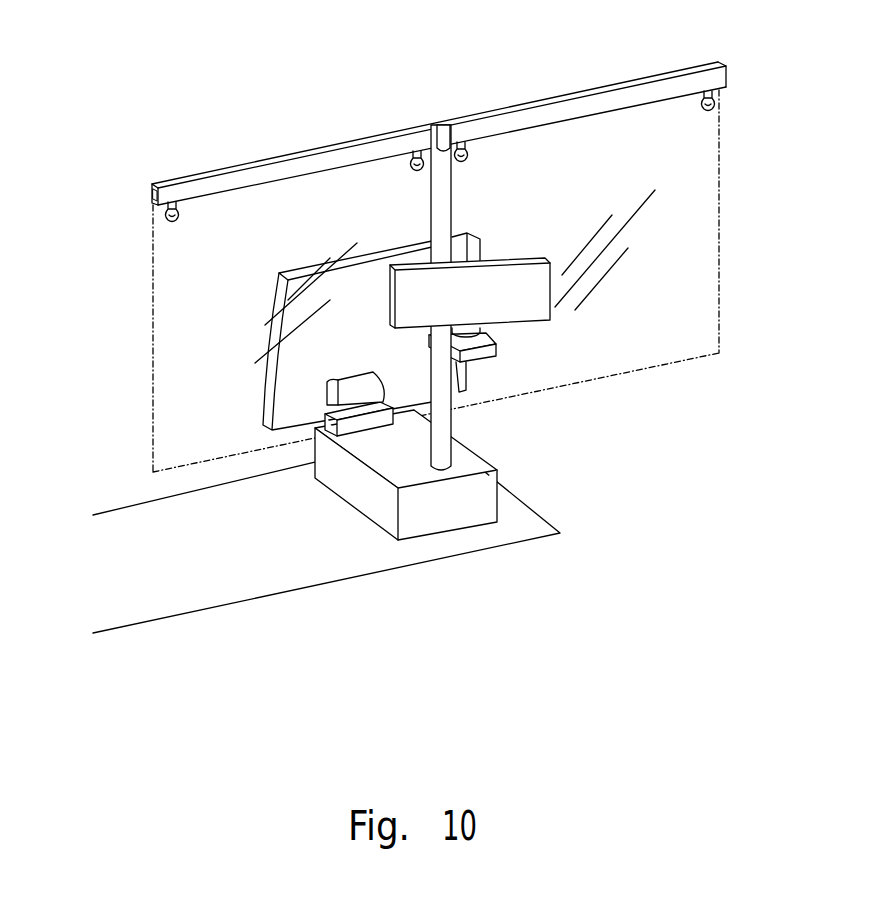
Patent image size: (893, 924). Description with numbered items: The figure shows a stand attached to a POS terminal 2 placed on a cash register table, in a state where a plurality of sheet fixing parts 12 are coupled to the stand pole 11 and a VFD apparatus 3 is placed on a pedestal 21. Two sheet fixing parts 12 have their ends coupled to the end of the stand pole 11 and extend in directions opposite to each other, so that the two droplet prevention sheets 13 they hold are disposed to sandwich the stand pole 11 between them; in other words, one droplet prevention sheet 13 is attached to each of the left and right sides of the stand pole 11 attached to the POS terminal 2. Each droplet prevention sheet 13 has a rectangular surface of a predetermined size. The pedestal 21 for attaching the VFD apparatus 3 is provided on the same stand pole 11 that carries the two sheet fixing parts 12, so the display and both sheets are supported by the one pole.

The POS terminal 2 is at (409, 555).
The VFD apparatus 3 is at (525, 315).
The stand pole 11 is at (443, 172).
The sheet fixing part 12 is at (300, 168).
The droplet prevention sheet 13 is at (180, 319).
The pedestal 21 is at (477, 348).